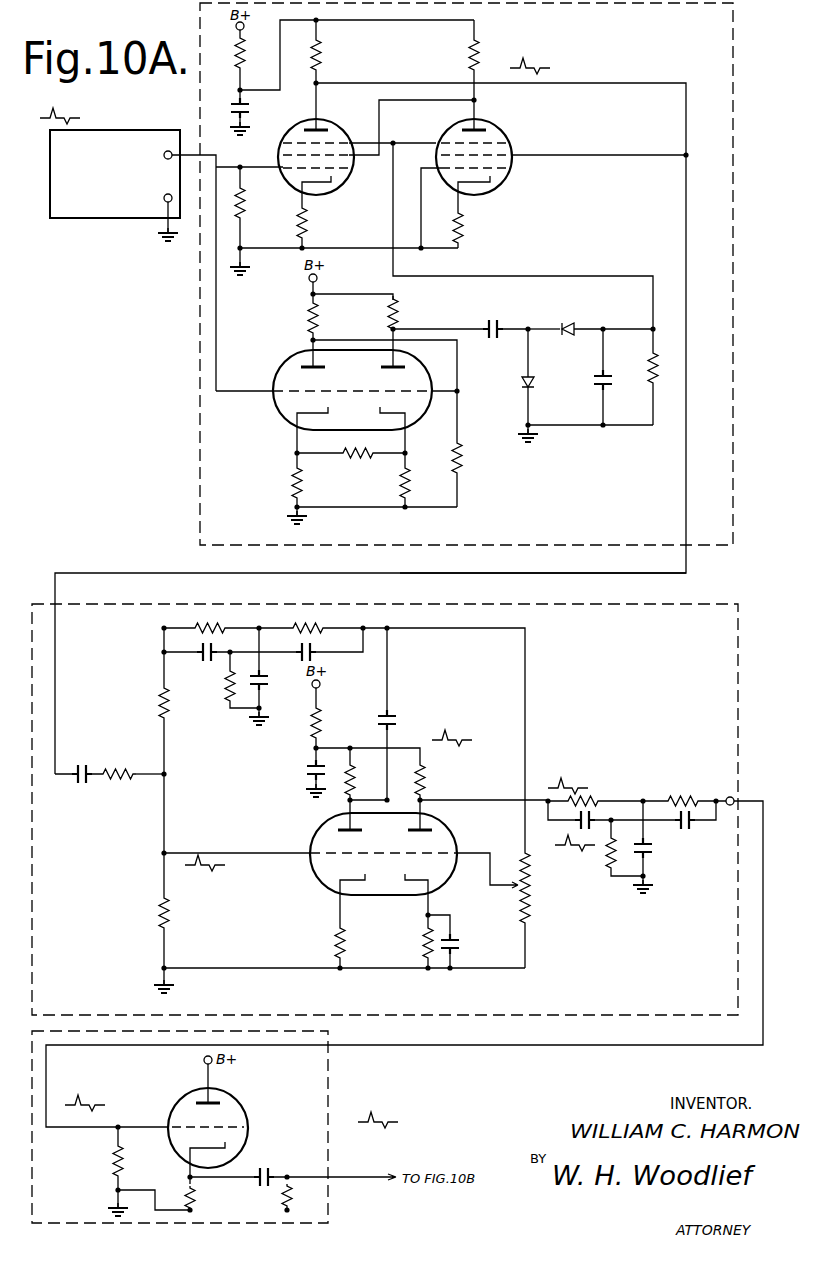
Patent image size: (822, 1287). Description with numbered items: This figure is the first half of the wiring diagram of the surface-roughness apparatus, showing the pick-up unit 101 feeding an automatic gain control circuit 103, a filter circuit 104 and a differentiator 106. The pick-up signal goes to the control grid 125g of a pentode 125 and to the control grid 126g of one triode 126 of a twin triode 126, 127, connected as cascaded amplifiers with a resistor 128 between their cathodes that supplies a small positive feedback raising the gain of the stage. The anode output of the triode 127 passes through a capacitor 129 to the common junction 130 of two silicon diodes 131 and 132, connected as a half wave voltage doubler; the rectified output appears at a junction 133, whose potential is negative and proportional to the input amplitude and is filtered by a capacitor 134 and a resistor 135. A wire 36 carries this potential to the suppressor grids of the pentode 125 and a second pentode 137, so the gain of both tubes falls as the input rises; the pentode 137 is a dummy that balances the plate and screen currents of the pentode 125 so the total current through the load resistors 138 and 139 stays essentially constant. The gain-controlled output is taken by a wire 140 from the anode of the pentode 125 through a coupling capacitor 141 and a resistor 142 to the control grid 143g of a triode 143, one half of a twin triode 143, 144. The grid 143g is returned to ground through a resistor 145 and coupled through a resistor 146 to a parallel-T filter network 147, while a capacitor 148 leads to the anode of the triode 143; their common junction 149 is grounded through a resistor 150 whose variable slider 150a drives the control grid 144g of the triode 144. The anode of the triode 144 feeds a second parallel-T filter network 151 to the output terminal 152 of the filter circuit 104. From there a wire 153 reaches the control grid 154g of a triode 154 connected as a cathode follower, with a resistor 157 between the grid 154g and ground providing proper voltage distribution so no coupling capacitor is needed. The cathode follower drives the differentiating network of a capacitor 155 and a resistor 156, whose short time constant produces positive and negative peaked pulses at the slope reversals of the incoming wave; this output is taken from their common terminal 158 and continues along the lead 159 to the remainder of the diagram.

The pick-up unit 101 is at (120, 140).
The automatic gain control circuit 103 is at (733, 350).
The filter circuit 104 is at (738, 645).
The differentiator 106 is at (328, 1070).
The wire 36 is at (392, 215).
The pentode 125 is at (350, 125).
The control grid of pentode 125 125g is at (300, 172).
The triode 126 is at (279, 354).
The control grid of triode 126 126g is at (298, 394).
The triode 127 is at (440, 372).
The resistor 128 is at (346, 463).
The capacitor 129 is at (495, 323).
The common junction 130 is at (528, 326).
The silicon diode 131 is at (575, 315).
The silicon diode 132 is at (534, 383).
The junction 133 is at (603, 326).
The capacitor 134 is at (613, 382).
The resistor 135 is at (658, 360).
The pentode 137 is at (508, 128).
The load resistor 138 is at (322, 55).
The load resistor 139 is at (469, 53).
The wire 140 is at (640, 580).
The coupling capacitor 141 is at (83, 752).
The resistor 142 is at (129, 786).
The triode 143 is at (306, 832).
The control grid of triode 143 143g is at (335, 856).
The triode 144 is at (468, 818).
The control grid of triode 144 144g is at (430, 856).
The resistor 145 is at (141, 944).
The resistor 146 is at (157, 700).
The parallel-T filter network 147 is at (243, 724).
The capacitor 148 is at (396, 722).
The common junction 149 is at (390, 626).
The resistor 150 is at (530, 908).
The variable slider 150a is at (518, 888).
The parallel-T filter network 151 is at (650, 778).
The output terminal 152 is at (728, 795).
The wire 153 is at (763, 888).
The triode 154 is at (192, 1090).
The control grid of triode 154 154g is at (224, 1127).
The capacitor 155 is at (262, 1185).
The resistor 156 is at (305, 1198).
The resistor 157 is at (112, 1160).
The common terminal 158 is at (288, 1172).
The output conductor 159 is at (345, 1177).